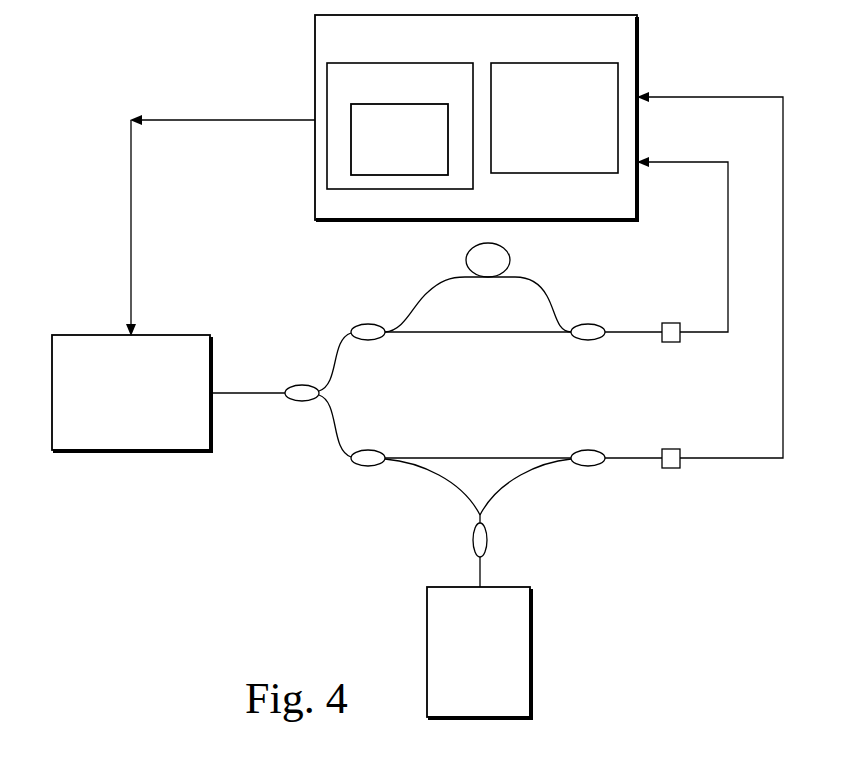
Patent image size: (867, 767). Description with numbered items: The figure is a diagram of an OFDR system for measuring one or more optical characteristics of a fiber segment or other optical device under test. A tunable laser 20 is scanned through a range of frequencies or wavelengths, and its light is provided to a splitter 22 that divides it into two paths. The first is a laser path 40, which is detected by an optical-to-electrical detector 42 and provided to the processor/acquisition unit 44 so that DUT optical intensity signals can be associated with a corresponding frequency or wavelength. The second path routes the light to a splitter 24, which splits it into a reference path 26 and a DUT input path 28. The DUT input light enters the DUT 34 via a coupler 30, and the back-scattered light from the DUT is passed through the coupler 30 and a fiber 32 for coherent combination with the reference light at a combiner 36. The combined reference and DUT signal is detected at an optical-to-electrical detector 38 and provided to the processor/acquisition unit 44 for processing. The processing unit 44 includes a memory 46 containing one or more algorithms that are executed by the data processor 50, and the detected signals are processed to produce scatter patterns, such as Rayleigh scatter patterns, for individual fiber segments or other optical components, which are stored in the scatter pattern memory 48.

The tunable laser 20 is at (183, 453).
The splitter 22 is at (296, 401).
The splitter 24 is at (375, 465).
The reference path 26 is at (480, 455).
The DUT input path 28 is at (447, 477).
The coupler 30 is at (488, 540).
The fiber 32 is at (516, 477).
The DUT 34 is at (533, 641).
The combiner 36 is at (580, 461).
The optical-to-electrical detector 38 is at (667, 469).
The laser path 40 is at (550, 288).
The optical-to-electrical detector 42 is at (666, 342).
The processor/acquisition unit 44 is at (640, 52).
The memory 46 is at (358, 190).
The scatter pattern memory 48 is at (352, 115).
The data processor 50 is at (568, 63).